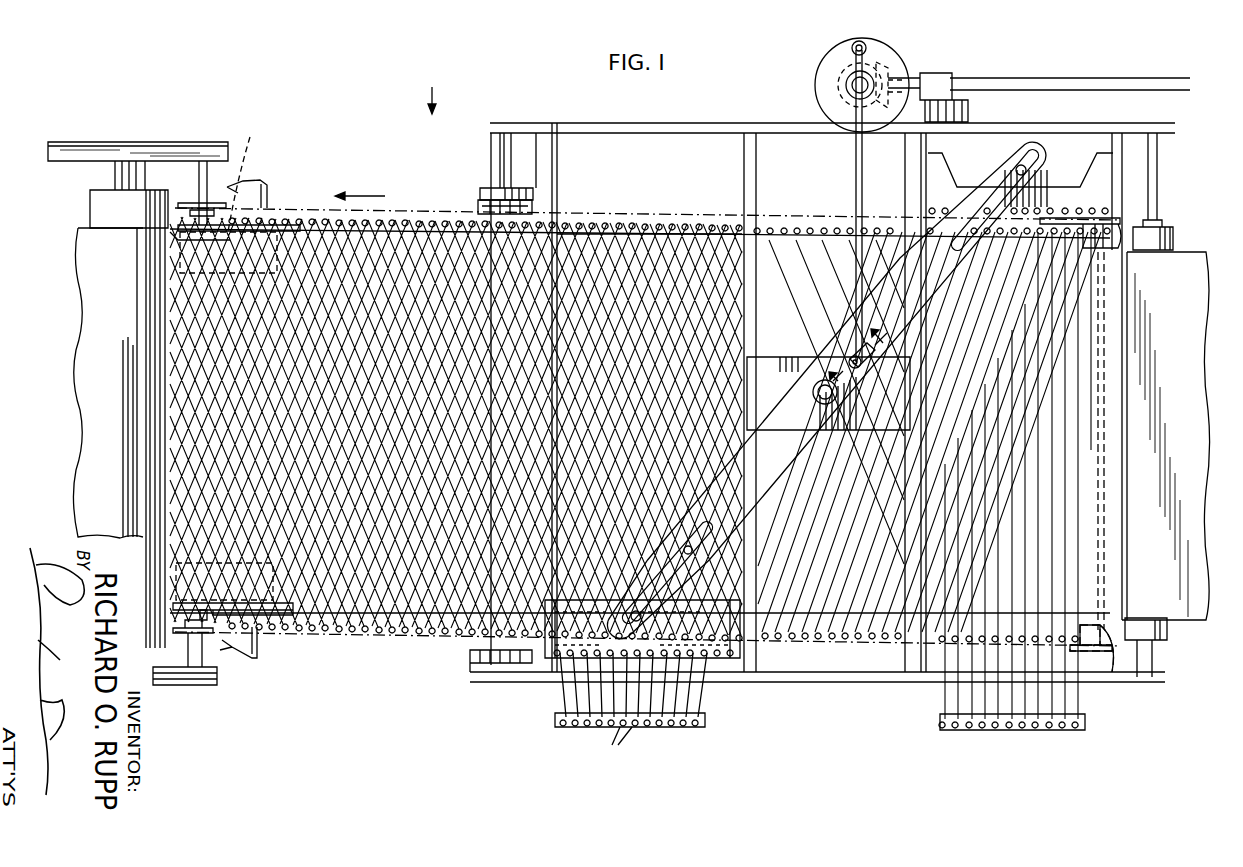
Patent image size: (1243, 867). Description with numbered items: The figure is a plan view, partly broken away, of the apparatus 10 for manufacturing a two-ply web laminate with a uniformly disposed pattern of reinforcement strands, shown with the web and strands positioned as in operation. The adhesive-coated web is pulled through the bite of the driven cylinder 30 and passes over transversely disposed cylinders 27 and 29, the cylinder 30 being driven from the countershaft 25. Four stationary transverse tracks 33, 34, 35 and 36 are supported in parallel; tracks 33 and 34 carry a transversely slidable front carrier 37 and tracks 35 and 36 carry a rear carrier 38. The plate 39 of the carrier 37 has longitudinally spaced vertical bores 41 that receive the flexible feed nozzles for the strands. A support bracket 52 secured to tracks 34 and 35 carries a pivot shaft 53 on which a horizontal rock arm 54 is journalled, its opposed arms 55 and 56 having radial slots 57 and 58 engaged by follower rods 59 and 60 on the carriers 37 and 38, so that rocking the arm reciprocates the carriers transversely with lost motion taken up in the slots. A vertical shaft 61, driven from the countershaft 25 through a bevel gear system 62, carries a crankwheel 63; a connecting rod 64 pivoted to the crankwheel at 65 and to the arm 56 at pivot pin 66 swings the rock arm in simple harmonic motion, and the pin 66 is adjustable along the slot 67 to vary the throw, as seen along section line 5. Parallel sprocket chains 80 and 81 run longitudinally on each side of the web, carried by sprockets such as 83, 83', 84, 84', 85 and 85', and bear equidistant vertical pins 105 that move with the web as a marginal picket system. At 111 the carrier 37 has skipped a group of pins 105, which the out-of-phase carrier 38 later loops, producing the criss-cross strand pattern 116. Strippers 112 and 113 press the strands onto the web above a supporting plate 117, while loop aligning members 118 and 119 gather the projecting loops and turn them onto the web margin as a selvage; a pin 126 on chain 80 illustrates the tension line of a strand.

The apparatus 10 is at (433, 90).
The countershaft 25 is at (1068, 82).
The rotatable cylinder 27 is at (1165, 238).
The rotatable cylinder 29 is at (482, 197).
The cylinder 30 is at (90, 300).
The track 33 is at (553, 172).
The track 34 is at (757, 172).
The track 35 is at (905, 194).
The track 36 is at (1120, 157).
The front carrier 37 is at (722, 660).
The rear carrier 38 is at (947, 180).
The plate 39 is at (550, 660).
The vertical bores 41 is at (633, 710).
The support bracket 52 is at (894, 420).
The pivot shaft 53 is at (813, 398).
The rock arm 54 is at (828, 333).
The arm 55 is at (746, 510).
The arm 56 is at (930, 284).
The elongated slot 57 is at (687, 546).
The elongated slot 58 is at (1002, 200).
The follower rod 59 is at (639, 611).
The follower rod 60 is at (1007, 163).
The vertical shaft 61 is at (852, 88).
The bevel gear system 62 is at (893, 68).
The crankwheel 63 is at (828, 103).
The connecting rod 64 is at (863, 170).
The pivotal connection 65 is at (866, 45).
The pivot pin 66 is at (853, 357).
The slot 67 is at (867, 360).
The sprocket chain 80 is at (340, 641).
The sprocket chain 81 is at (318, 228).
The sprocket 83 is at (1112, 213).
The sprocket 83' is at (1041, 491).
The sprocket 84 is at (538, 198).
The lower clamp plate 84' is at (487, 667).
The sprocket 85 is at (196, 193).
The lower bracket plate 85' is at (185, 647).
The pins 105 is at (406, 217).
The skipped pin group 111 is at (812, 222).
The stripper 112 is at (272, 200).
The stripper 113 is at (268, 640).
The bracket and screw arrangement 116 is at (830, 282).
The supporting plate 117 is at (228, 195).
The loop aligning member 118 is at (175, 227).
The loop aligning member 119 is at (210, 563).
The pin 126 is at (587, 220).
The section line 5- 5 is at (851, 343).